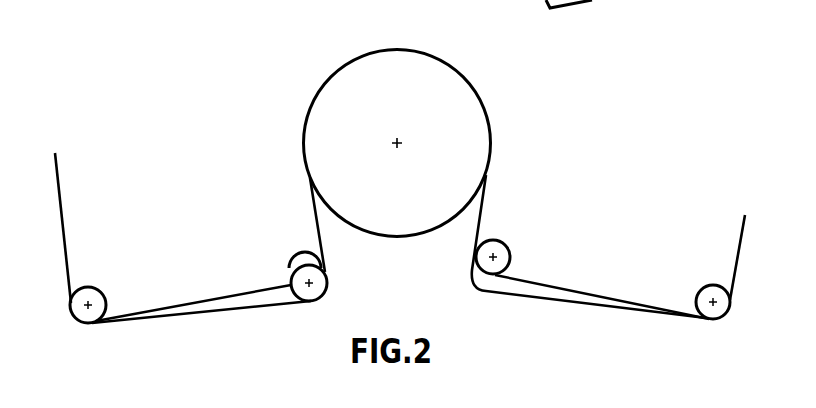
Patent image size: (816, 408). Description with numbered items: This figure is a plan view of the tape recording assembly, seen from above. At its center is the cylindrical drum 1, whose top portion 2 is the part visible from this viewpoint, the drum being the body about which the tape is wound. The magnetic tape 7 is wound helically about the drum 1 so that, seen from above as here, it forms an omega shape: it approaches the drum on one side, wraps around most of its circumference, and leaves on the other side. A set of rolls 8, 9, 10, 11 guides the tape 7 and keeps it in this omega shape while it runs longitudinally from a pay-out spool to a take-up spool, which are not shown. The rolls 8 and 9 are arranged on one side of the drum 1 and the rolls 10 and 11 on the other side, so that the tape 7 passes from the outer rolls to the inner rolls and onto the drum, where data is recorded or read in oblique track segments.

The cylindrical drum 1 is at (362, 44).
The top portion 2 is at (463, 98).
The magnetic tape 7 is at (302, 147).
The roll 8 is at (74, 289).
The roll 9 is at (292, 263).
The roll 10 is at (505, 266).
The roll 11 is at (706, 289).